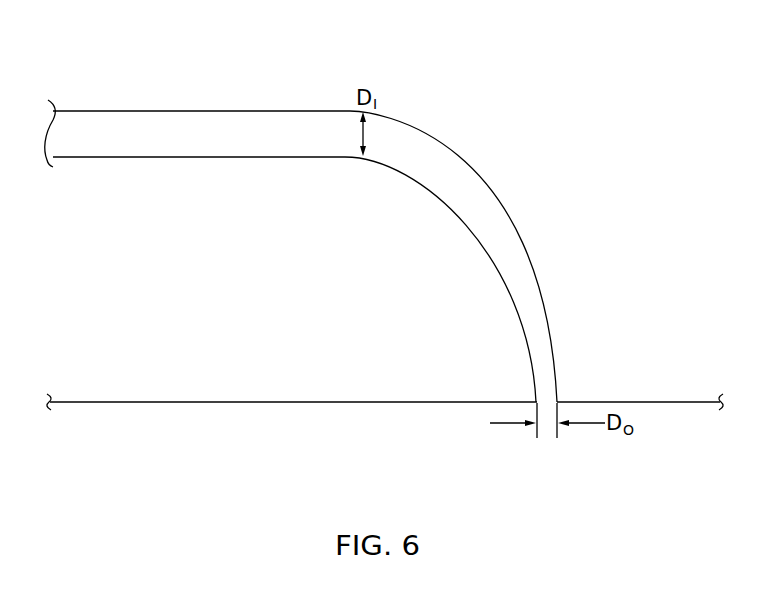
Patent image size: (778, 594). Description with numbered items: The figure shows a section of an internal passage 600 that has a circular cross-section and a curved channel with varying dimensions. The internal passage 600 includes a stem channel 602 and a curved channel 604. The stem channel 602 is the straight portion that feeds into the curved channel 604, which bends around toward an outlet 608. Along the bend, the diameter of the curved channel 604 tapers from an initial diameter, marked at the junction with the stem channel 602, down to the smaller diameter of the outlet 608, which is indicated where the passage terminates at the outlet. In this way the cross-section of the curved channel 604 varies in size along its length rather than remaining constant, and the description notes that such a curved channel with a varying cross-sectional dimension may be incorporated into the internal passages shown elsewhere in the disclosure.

The internal passage 600 is at (301, 227).
The stem channel 602 is at (172, 158).
The curved channel 604 is at (475, 170).
The outlet 608 is at (548, 398).